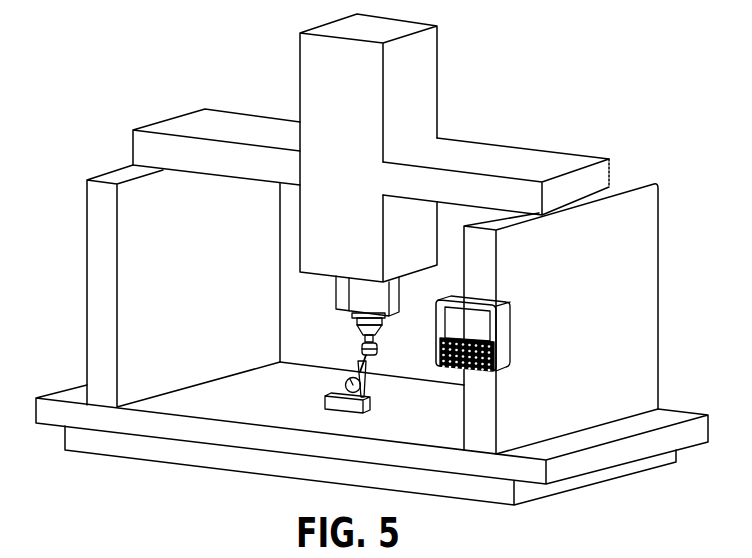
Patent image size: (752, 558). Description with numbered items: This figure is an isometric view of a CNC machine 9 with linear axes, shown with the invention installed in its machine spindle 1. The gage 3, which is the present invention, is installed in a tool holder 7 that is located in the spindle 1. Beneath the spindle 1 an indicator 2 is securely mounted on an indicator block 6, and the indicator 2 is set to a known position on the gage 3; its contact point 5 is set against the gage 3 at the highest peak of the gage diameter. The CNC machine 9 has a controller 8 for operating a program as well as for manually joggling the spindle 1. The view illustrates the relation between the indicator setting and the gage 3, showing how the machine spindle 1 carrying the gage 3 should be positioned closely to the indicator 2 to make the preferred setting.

The machine spindle 1 is at (349, 303).
The indicator 2 is at (365, 385).
The gage 3 is at (362, 347).
The contact point 5 is at (372, 358).
The indicator block 6 is at (325, 402).
The tool holder 7 is at (383, 325).
The controller 8 is at (511, 345).
The CNC machine 9 is at (310, 243).